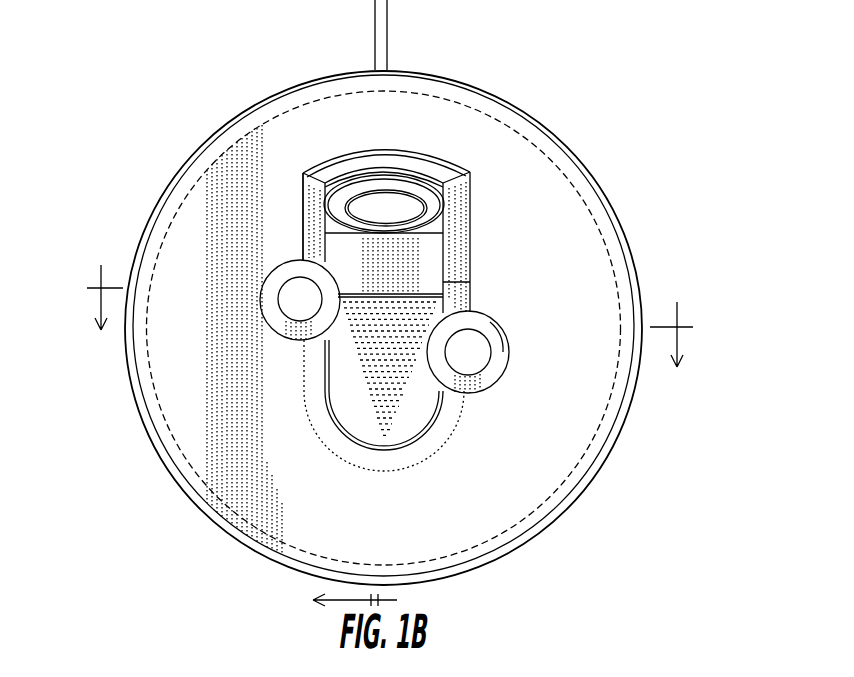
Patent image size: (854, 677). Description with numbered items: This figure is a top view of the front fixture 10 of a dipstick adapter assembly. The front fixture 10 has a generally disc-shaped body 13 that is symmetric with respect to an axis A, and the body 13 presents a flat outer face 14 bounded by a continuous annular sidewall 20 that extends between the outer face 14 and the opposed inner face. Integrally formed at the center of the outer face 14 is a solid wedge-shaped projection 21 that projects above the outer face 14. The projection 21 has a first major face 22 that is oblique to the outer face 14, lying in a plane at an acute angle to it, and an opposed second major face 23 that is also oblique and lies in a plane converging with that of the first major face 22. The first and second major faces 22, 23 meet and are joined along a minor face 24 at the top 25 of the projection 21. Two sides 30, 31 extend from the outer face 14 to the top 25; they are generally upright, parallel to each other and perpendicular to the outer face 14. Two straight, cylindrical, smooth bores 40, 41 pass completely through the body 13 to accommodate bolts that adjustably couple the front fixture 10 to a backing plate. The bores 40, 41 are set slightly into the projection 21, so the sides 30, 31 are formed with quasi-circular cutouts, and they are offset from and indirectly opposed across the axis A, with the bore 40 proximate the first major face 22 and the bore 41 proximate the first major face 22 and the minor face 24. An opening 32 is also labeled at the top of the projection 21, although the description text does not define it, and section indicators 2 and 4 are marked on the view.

The front fixture 10 is at (770, 128).
The body 13 is at (558, 137).
The continuous annular sidewall 20 is at (612, 447).
The outer face 14 is at (567, 343).
The section line 2 is at (355, 303).
The axis A is at (387, 46).
The section line 4 is at (386, 310).
The side 30 is at (461, 250).
The second major face 23 is at (446, 225).
The central opening 32 is at (385, 202).
The side 31 is at (313, 220).
The minor face 24 is at (385, 262).
The top 25 is at (446, 285).
The first major face 22 is at (435, 412).
The wedge-shaped projection 21 is at (315, 375).
The bore 41 is at (297, 304).
The bore 40 is at (462, 350).